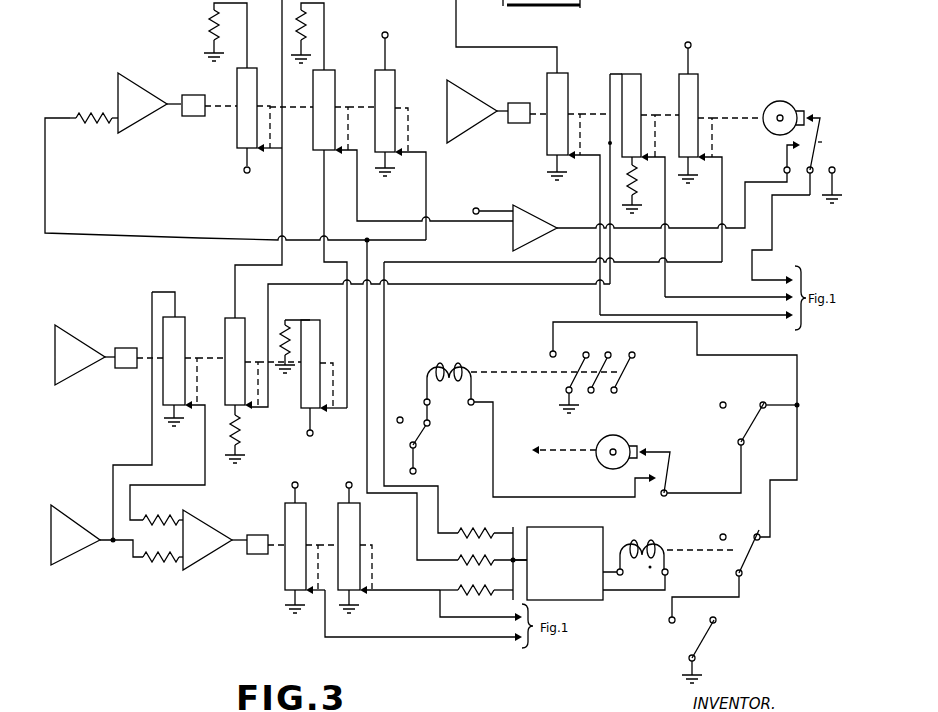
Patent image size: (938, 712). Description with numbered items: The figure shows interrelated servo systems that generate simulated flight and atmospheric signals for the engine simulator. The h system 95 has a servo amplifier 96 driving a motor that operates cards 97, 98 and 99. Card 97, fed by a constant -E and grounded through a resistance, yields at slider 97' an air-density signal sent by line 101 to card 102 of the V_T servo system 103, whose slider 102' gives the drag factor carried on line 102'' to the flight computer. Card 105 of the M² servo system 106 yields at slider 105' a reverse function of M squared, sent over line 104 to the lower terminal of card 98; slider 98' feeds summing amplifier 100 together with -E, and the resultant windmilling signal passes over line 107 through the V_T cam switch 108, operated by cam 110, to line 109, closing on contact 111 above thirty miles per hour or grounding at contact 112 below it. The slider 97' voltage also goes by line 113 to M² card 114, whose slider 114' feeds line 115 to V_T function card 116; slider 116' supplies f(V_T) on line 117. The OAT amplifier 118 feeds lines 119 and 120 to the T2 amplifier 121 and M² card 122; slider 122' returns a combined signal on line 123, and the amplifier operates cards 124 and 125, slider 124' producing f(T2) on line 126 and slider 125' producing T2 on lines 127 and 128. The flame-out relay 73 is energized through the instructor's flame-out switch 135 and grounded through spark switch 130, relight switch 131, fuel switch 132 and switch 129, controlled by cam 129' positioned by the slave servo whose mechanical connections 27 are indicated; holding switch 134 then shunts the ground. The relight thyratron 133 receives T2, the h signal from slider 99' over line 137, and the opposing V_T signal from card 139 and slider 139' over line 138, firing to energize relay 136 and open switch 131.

The h system 95 is at (178, 79).
The servo amplifier 96 is at (142, 119).
The card 97 is at (237, 96).
The slider 97' is at (269, 163).
The h servo card 98 is at (322, 78).
The slider 98' is at (426, 185).
The h card 99 is at (378, 97).
The slider 99' is at (412, 196).
The summing amplifier 100 is at (535, 205).
The line 101 is at (280, 30).
The card 102 is at (564, 119).
The slider 102' is at (586, 235).
The line 102'' is at (696, 308).
The V_T servo system 103 is at (512, 91).
The line 104 is at (324, 214).
The card 105 is at (306, 375).
The slider 105' is at (346, 424).
The M² servo system 106 is at (125, 334).
The line 107 is at (562, 228).
The V_T cam switch 108 is at (838, 100).
The line 109 is at (774, 215).
The V_T servo cam 110 is at (786, 100).
The contact 111 is at (780, 154).
The contact 112 is at (814, 180).
The line 113 is at (283, 195).
The M² card 114 is at (263, 378).
The slider 114' is at (429, 358).
The line 115 is at (609, 102).
The V_T function card 116 is at (650, 137).
The slider 116' is at (659, 227).
The line 117 is at (703, 292).
The OAT amplifier 118 is at (65, 508).
The line 119 is at (104, 545).
The line 120 is at (152, 438).
The T2 amplifier 121 is at (206, 560).
The M² card 122 is at (181, 360).
The slider 122' is at (186, 437).
The line 123 is at (205, 468).
The function card 124 is at (294, 540).
The slider 124' is at (309, 613).
The linear card 125 is at (342, 540).
The slider 125' is at (403, 602).
The line 126 is at (390, 636).
The line 127 is at (473, 600).
The line 128 is at (440, 579).
The N2/√θ2 switch 129 is at (690, 470).
The cam 129' is at (616, 441).
The spark switch 130 is at (713, 628).
The relight switch 131 is at (752, 547).
The fuel switch 132 is at (748, 420).
The relight thyratron 133 is at (577, 527).
The holding switch 134 is at (566, 386).
The flame-out switch 135 is at (412, 434).
The relay 136 is at (657, 538).
The line 137 is at (402, 498).
The line 138 is at (448, 498).
The V_T card 139 is at (720, 105).
The slider 139' is at (712, 209).
The flame-out relay 73 is at (430, 366).
The mechanical connections 27 is at (572, 450).